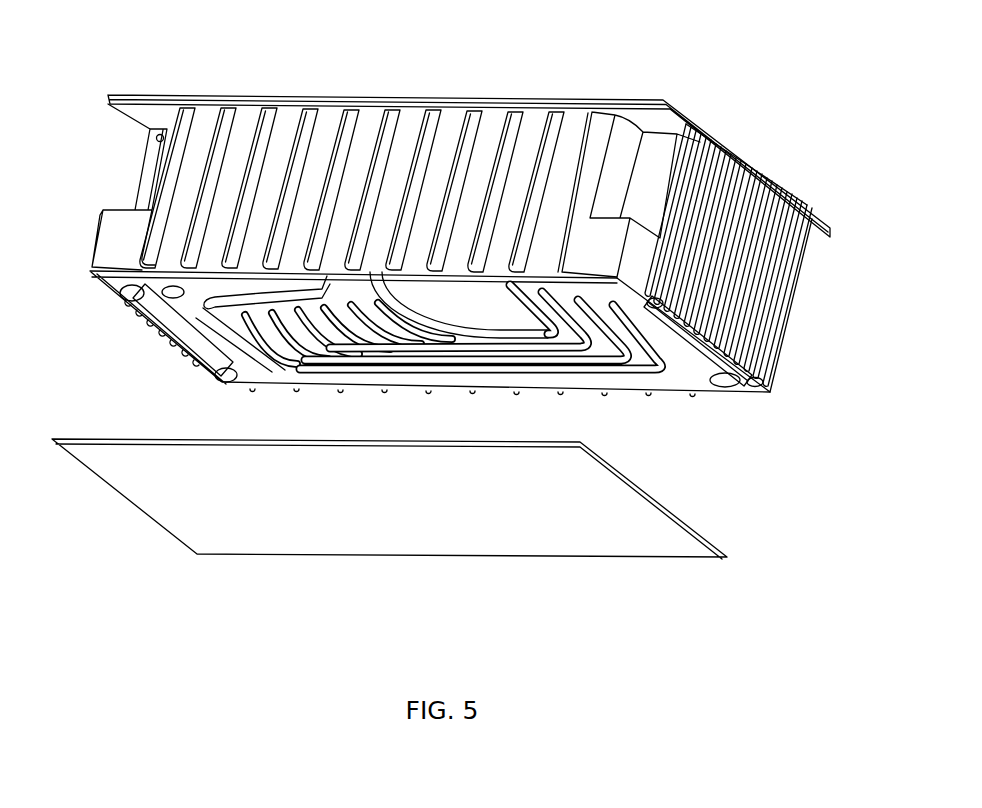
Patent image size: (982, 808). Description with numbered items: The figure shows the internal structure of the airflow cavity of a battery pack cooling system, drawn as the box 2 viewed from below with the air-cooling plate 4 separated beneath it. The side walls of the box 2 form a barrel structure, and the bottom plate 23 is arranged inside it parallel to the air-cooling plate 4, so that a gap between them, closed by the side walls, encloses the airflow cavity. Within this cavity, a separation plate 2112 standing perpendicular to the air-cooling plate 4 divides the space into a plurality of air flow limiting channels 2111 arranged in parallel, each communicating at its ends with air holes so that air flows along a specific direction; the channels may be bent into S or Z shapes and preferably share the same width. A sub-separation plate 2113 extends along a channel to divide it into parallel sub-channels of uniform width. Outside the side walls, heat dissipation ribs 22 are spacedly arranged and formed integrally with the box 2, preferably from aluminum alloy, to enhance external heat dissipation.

The box 2 is at (460, 246).
The heat dissipation ribs 22 is at (528, 58).
The bottom plate 23 is at (683, 360).
The air flow limiting channels 2111 is at (200, 418).
The separation plate 2112 is at (682, 433).
The sub-separation plate 2113 is at (298, 423).
The air-cooling plate 4 is at (552, 618).